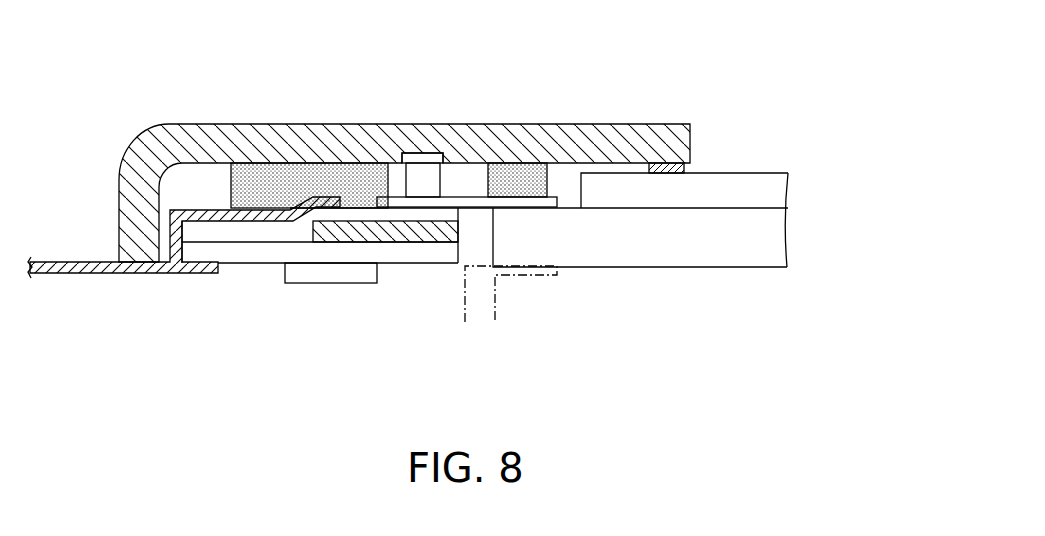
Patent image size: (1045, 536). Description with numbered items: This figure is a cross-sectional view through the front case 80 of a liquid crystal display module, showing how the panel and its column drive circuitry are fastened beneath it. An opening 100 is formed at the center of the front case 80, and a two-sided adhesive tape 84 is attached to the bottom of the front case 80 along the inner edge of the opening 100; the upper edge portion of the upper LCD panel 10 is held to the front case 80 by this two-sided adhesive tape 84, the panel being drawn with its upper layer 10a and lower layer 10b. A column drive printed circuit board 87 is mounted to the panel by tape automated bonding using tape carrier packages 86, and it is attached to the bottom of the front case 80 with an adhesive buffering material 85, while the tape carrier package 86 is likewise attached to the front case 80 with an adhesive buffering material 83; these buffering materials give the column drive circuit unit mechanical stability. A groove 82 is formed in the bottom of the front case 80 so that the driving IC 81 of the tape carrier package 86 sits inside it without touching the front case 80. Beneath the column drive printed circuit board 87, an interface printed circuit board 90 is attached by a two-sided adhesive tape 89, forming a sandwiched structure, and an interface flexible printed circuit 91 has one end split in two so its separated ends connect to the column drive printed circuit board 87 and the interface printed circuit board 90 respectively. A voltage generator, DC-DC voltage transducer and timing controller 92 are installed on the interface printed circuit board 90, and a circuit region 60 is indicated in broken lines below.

The opening 100 is at (734, 120).
The upper LCD panel 10 is at (804, 158).
The upper substrate layer 10a is at (778, 193).
The lower substrate layer 10b is at (778, 243).
The front case 80 is at (632, 138).
The driving IC 81 is at (415, 167).
The groove 82 is at (433, 155).
The adhesive buffering material 83 is at (523, 168).
The two-sided adhesive tape 84 is at (687, 170).
The adhesive buffering material 85 is at (278, 172).
The tape carrier package 86 is at (547, 208).
The column drive printed circuit board 87 is at (351, 213).
The two-sided adhesive tape 89 is at (357, 236).
The interface printed circuit board 90 is at (413, 256).
The interface flexible printed circuit 91 is at (167, 278).
The voltage generator, DC-DC voltage transducer and timing controller 92 is at (308, 279).
The circuit element 60 is at (518, 274).